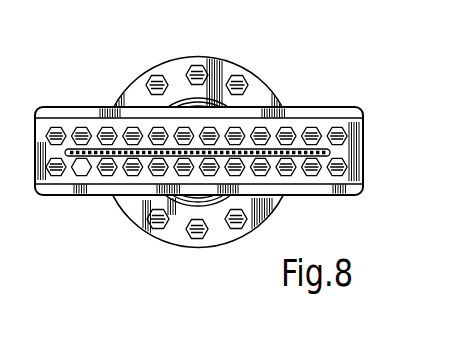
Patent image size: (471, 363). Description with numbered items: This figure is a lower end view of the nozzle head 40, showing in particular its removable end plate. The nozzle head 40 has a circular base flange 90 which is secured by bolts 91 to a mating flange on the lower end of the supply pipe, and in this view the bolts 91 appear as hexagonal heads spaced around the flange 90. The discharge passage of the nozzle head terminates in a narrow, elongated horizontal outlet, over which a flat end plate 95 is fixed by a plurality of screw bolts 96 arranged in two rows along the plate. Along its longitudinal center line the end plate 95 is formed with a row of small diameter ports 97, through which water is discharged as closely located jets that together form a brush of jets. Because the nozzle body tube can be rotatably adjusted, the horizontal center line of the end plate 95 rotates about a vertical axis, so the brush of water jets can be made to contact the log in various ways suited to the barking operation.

The nozzle head 40 is at (107, 99).
The base flange 90 is at (228, 68).
The bolts 91 is at (240, 93).
The flat end plate 95 is at (347, 153).
The screw bolts 96 is at (160, 163).
The small diameter ports 97 is at (105, 155).